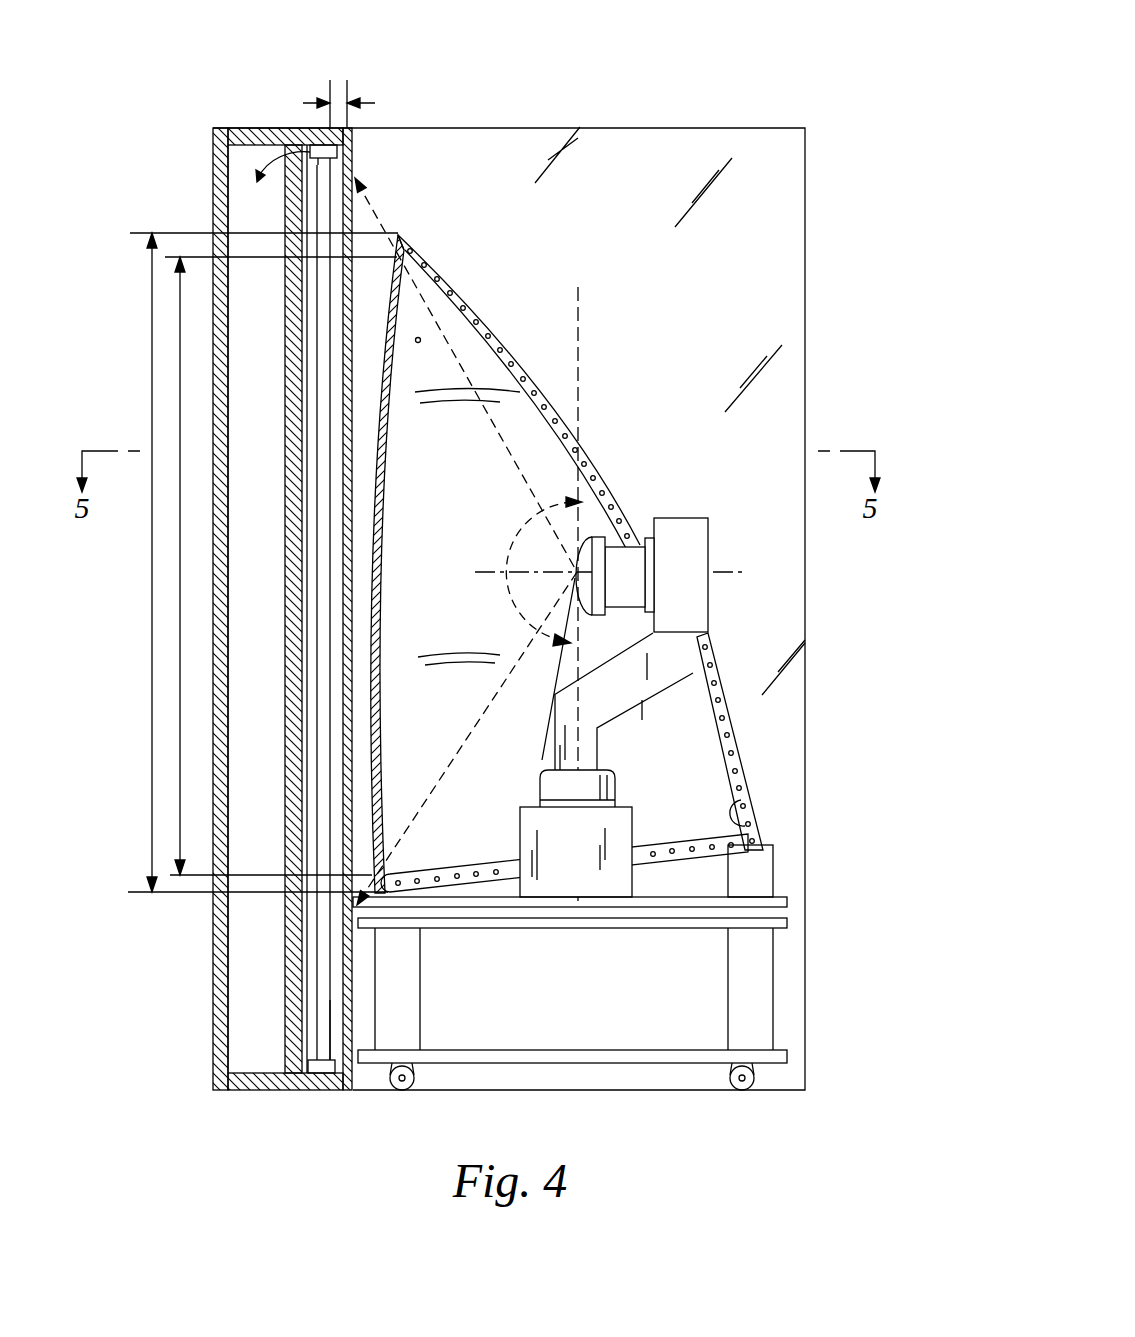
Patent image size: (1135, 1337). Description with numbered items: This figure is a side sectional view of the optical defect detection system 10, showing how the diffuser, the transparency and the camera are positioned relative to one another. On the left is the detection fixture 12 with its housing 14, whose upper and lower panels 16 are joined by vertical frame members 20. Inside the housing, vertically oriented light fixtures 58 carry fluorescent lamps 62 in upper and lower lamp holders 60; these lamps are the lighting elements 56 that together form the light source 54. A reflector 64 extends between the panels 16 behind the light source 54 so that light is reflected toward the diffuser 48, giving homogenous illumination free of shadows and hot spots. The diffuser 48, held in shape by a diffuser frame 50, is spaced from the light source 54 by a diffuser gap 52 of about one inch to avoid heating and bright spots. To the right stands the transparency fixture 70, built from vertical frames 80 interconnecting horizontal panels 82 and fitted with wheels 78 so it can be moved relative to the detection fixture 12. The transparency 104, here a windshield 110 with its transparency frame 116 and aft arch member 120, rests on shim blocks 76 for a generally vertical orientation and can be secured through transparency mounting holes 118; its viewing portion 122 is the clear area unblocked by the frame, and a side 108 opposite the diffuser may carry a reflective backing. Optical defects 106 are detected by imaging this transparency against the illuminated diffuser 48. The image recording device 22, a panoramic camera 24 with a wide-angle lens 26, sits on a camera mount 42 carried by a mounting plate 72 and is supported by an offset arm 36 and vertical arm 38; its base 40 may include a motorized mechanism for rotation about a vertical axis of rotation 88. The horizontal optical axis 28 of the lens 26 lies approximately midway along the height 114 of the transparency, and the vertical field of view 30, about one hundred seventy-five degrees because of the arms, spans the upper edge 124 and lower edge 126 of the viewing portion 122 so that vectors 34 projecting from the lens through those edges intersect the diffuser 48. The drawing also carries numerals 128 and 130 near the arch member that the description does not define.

The optical defect detection system 10 is at (756, 94).
The detection fixture 12 is at (234, 594).
The housing 14 is at (218, 190).
The panels 16 is at (221, 119).
The vertical frame members 20 is at (215, 993).
The image recording device 22 is at (678, 556).
The panoramic camera 24 is at (681, 518).
The wide-angle lens 26 is at (578, 558).
The optical axis 28 is at (487, 572).
The vertical field of view 30 is at (508, 602).
The vectors 34 is at (377, 210).
The offset arm 36 is at (614, 705).
The vertical arm 38 is at (590, 748).
The base 40 is at (607, 787).
The camera mount 42 is at (622, 822).
The diffuser 48 is at (340, 1040).
The diffuser frame 50 is at (352, 137).
The diffuser gap 52 is at (303, 103).
The light source 54 is at (211, 612).
The lighting elements 56 is at (211, 612).
The fluorescent lamps 62 is at (320, 1025).
The light fixtures 58 is at (285, 968).
The lamp holders 60 is at (350, 150).
The reflector 64 is at (287, 910).
The transparency fixture 70 is at (608, 999).
The mounting plate 72 is at (788, 903).
The shim blocks 76 is at (767, 873).
The wheels 78 is at (405, 1092).
The vertical frames 80 is at (574, 989).
The horizontal panels 82 is at (788, 922).
The vertical axis of rotation 88 is at (580, 310).
The transparency 104 is at (445, 564).
The windshield 110 is at (445, 564).
The optical defects 106 is at (420, 338).
The side 108 is at (400, 291).
The height 114 is at (150, 638).
The transparency frame 116 is at (526, 383).
The transparency mounting holes 118 is at (717, 707).
The aft arch member 120 is at (628, 901).
The viewing portion 122 is at (178, 710).
The upper edge 124 is at (478, 233).
The pivot pin 130 is at (405, 252).
The lower edge 126 is at (415, 863).
The bracket pivot 128 is at (733, 815).